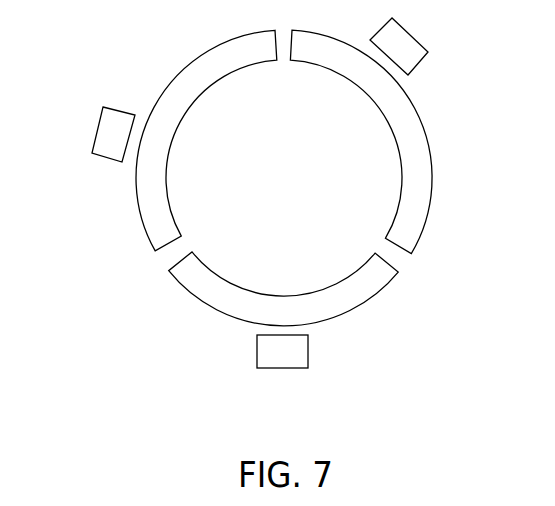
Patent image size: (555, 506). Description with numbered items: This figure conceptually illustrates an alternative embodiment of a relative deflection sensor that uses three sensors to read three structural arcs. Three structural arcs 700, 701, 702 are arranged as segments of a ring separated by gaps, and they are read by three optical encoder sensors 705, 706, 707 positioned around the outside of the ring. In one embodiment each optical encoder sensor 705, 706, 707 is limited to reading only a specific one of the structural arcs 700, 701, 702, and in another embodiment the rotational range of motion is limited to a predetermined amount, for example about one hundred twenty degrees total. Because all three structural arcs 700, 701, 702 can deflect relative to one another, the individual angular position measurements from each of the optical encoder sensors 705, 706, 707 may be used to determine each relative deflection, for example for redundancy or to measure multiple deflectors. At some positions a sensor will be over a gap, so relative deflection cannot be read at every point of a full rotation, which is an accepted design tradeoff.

The structural arc 700 is at (207, 49).
The structural arc 701 is at (434, 176).
The structural arc 702 is at (365, 300).
The optical encoder sensor 705 is at (98, 130).
The optical encoder sensor 706 is at (412, 33).
The optical encoder sensor 707 is at (282, 369).